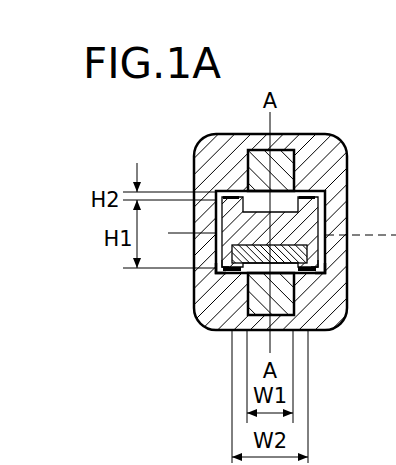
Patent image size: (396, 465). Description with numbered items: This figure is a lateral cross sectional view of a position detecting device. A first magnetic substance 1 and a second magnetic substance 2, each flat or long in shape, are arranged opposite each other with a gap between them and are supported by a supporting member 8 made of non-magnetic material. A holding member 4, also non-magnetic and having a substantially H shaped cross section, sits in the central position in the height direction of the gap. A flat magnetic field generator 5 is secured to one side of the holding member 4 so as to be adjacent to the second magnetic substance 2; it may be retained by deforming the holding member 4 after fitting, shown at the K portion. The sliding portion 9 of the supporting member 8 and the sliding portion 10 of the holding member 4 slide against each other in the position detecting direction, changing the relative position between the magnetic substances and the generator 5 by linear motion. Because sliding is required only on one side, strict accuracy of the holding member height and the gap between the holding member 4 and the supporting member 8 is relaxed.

The first magnetic substance 1 is at (286, 136).
The second magnetic substance 2 is at (310, 318).
The holding member 4 is at (305, 224).
The magnetic field generator 5 is at (306, 254).
The supporting member 8 is at (347, 165).
The sliding portion of the supporting member 9 is at (214, 284).
The sliding portion of the holding member 10 is at (222, 275).
The K portion K is at (205, 262).